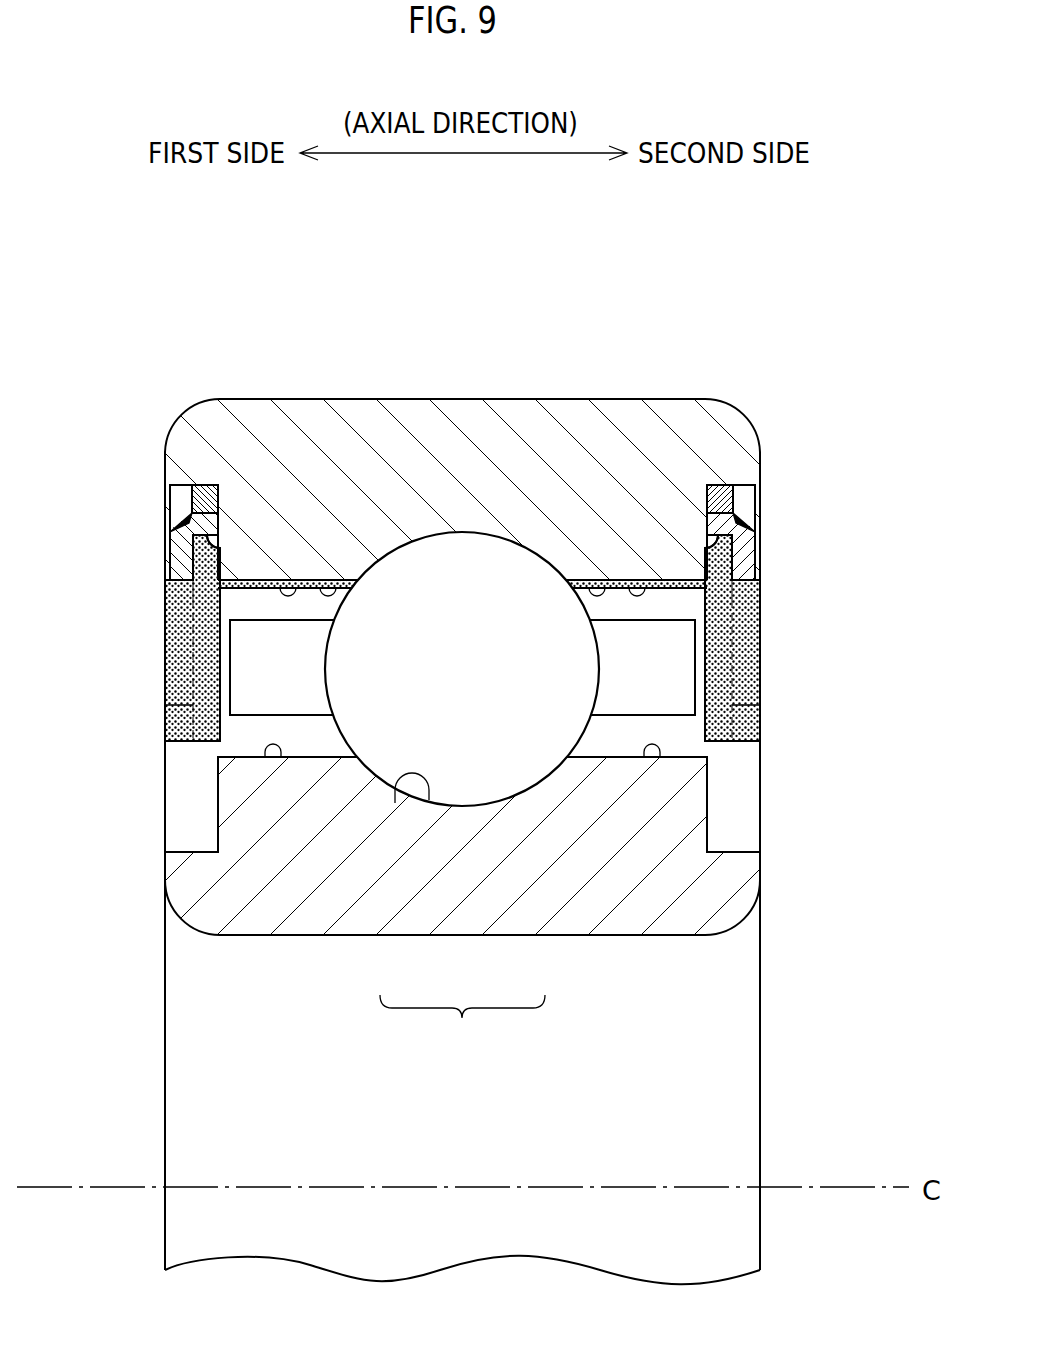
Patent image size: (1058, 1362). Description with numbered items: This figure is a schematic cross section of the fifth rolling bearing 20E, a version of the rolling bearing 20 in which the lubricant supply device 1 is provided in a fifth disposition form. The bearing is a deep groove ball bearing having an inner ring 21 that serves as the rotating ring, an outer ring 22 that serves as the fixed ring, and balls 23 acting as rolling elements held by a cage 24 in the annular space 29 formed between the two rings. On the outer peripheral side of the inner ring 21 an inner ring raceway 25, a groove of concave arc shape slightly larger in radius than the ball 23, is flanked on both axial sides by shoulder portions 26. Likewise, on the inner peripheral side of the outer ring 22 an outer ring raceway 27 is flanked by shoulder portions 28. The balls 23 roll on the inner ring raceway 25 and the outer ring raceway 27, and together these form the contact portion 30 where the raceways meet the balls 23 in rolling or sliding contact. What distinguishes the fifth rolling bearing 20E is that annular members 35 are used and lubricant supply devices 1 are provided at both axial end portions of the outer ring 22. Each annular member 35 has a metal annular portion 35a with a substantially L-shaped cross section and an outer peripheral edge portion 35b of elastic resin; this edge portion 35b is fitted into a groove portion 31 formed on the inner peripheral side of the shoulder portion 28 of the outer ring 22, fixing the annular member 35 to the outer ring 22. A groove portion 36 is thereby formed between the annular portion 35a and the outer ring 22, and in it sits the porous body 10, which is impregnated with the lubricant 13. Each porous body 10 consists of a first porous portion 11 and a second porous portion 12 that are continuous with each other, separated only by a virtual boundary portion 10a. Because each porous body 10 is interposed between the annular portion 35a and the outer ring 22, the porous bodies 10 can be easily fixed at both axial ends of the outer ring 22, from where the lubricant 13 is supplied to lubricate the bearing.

The lubricant supply device 1 is at (186, 748).
The porous body 10 is at (103, 588).
The virtual boundary portion 10a is at (190, 705).
The first porous portion 11 is at (172, 650).
The second porous portion 12 is at (202, 602).
The lubricant 13 is at (337, 581).
The fifth rolling bearing 20E is at (462, 366).
The rolling bearing 20 is at (490, 699).
The inner ring 21 is at (712, 895).
The outer ring 22 is at (556, 440).
The ball 23 is at (453, 763).
The cage 24 is at (300, 697).
The inner ring raceway 25 is at (395, 803).
The shoulder portion 26 is at (265, 758).
The outer ring raceway 27 is at (487, 537).
The shoulder portion 28 is at (289, 587).
The annular space 29 is at (597, 744).
The contact portion 30 is at (462, 1028).
The groove portion 31 is at (218, 505).
The annular member 35 is at (170, 522).
The annular portion 35a is at (178, 550).
The outer peripheral edge portion 35b is at (192, 500).
The groove portion 36 is at (219, 556).